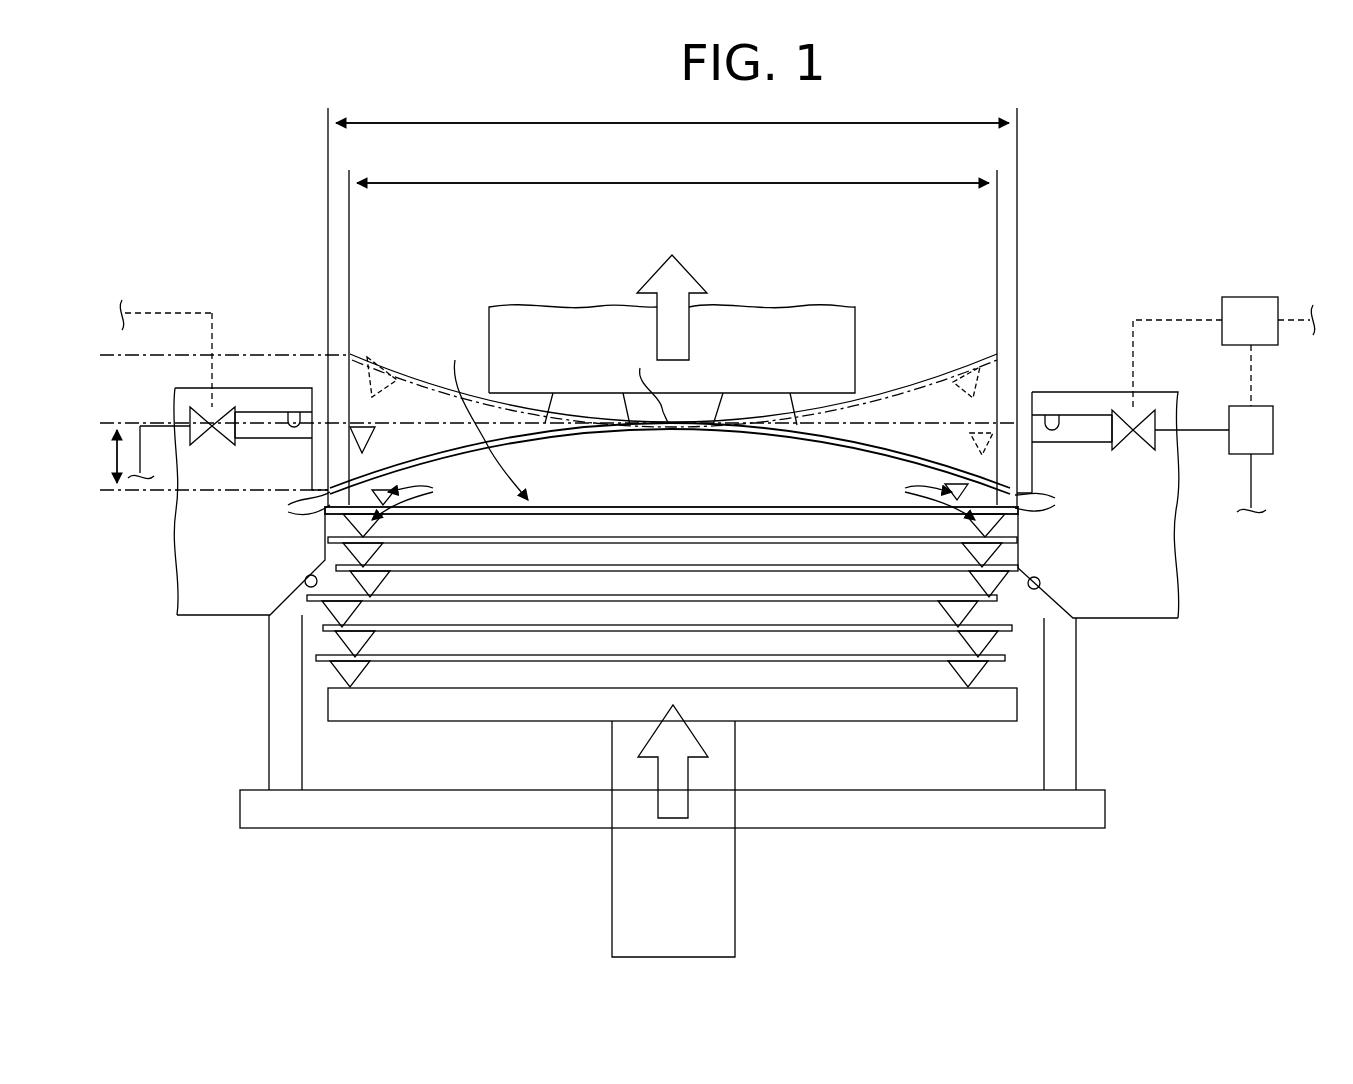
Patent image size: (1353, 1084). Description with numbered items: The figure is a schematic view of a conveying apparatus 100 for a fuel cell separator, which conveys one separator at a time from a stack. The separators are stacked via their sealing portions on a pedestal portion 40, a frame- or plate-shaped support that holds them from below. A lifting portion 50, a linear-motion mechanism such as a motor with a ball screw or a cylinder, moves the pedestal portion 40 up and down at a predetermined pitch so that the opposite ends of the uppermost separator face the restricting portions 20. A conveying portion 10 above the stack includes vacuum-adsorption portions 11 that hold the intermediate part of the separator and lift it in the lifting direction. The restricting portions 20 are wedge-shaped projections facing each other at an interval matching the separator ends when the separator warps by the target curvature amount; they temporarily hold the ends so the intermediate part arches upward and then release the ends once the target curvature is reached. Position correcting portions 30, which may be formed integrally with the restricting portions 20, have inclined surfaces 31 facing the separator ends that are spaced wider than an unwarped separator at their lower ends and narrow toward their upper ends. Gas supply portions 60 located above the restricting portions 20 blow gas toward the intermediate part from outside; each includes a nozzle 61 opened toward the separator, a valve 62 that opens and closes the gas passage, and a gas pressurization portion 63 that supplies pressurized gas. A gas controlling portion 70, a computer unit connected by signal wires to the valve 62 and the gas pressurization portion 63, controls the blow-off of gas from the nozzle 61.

The conveying apparatus 100 is at (238, 216).
The conveying portion 10 is at (862, 322).
The vacuum-adsorption portion 11 is at (580, 402).
The restricting portion 20 is at (345, 482).
The position correcting portion 30 is at (290, 605).
The inclined surface 31 is at (303, 580).
The pedestal portion 40 is at (445, 705).
The lifting portion 50 is at (750, 905).
The gas supply portion 60 is at (267, 383).
The nozzle 61 is at (292, 412).
The valve 62 is at (190, 424).
The gas pressurization portion 63 is at (1273, 430).
The gas controlling portion 70 is at (1252, 297).